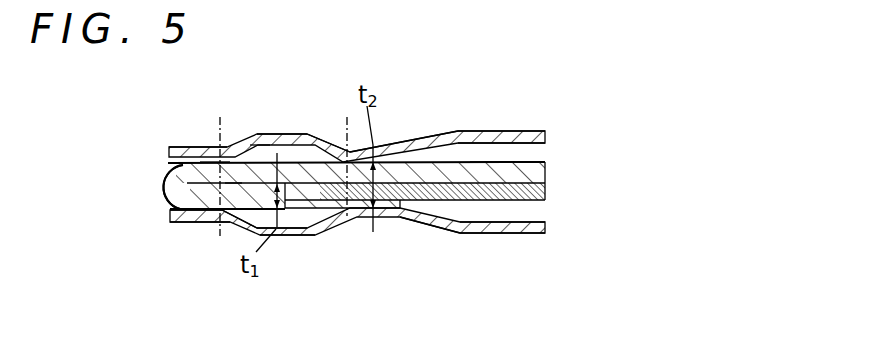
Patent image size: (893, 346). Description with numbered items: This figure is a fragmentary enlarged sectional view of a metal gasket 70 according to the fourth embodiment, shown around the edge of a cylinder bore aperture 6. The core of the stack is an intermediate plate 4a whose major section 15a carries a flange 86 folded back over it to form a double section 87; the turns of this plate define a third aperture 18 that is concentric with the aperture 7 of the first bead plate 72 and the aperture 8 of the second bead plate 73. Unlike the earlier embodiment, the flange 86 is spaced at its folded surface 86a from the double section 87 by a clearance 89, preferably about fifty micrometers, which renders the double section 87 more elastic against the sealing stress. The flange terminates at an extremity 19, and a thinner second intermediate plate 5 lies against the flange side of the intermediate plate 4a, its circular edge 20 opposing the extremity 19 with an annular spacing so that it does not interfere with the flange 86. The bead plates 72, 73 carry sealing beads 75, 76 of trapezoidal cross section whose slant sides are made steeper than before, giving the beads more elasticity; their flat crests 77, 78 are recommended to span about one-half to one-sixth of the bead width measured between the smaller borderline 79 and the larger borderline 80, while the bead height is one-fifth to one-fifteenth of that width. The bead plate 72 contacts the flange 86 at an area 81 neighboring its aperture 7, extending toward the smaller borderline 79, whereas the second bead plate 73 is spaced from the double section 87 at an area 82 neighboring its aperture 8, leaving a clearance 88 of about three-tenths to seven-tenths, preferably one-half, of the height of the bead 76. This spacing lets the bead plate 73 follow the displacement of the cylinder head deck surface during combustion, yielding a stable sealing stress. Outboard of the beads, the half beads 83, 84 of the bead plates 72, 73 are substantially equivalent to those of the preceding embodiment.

The intermediate plate 4a is at (541, 170).
The second intermediate plate 5 is at (541, 193).
The cylinder bore aperture 6 is at (104, 140).
The aperture 7 is at (168, 216).
The aperture 8 is at (165, 162).
The third aperture 18 is at (165, 184).
The major section 15a is at (489, 170).
The extremity 19 is at (296, 209).
The circular edge 20 is at (331, 209).
The metal gasket 70 is at (421, 119).
The bead plate 72 is at (396, 219).
The second bead plate 73 is at (391, 150).
The sealing bead 75 is at (309, 236).
The sealing bead 76 is at (319, 138).
The flat crest 77 is at (266, 237).
The flat crest 78 is at (286, 135).
The smaller borderline 79 is at (220, 236).
The larger borderline 80 is at (349, 217).
The area 81 is at (173, 224).
The area 82 is at (185, 149).
The half bead 83 is at (460, 234).
The half bead 84 is at (464, 137).
The flange 86 is at (208, 212).
The folded surface 86a is at (233, 182).
The double section 87 is at (214, 168).
The clearance 88 is at (170, 163).
The clearance 89 is at (257, 146).